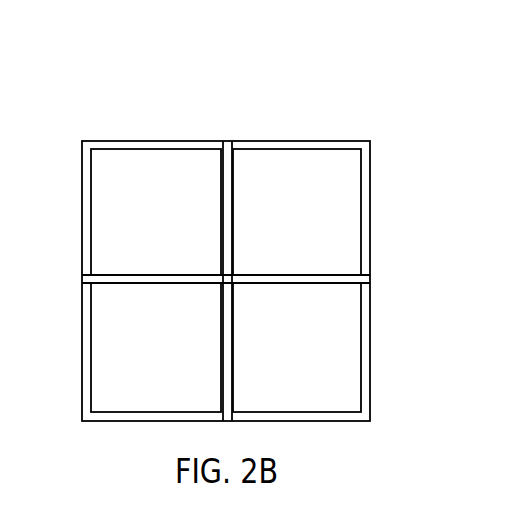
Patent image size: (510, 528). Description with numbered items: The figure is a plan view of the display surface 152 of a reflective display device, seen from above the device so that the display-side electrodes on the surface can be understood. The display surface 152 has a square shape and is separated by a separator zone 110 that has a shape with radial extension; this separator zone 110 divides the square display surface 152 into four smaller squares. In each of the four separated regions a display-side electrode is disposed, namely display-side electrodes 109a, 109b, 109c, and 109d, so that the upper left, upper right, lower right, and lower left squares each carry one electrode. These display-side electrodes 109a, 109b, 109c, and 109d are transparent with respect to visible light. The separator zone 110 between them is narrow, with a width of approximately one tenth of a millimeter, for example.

The display surface 152 is at (313, 141).
The separator zone 110 is at (229, 148).
The display-side electrode 109a is at (156, 212).
The display-side electrode 109b is at (297, 347).
The display-side electrode 109c is at (156, 347).
The display-side electrode 109d is at (297, 212).